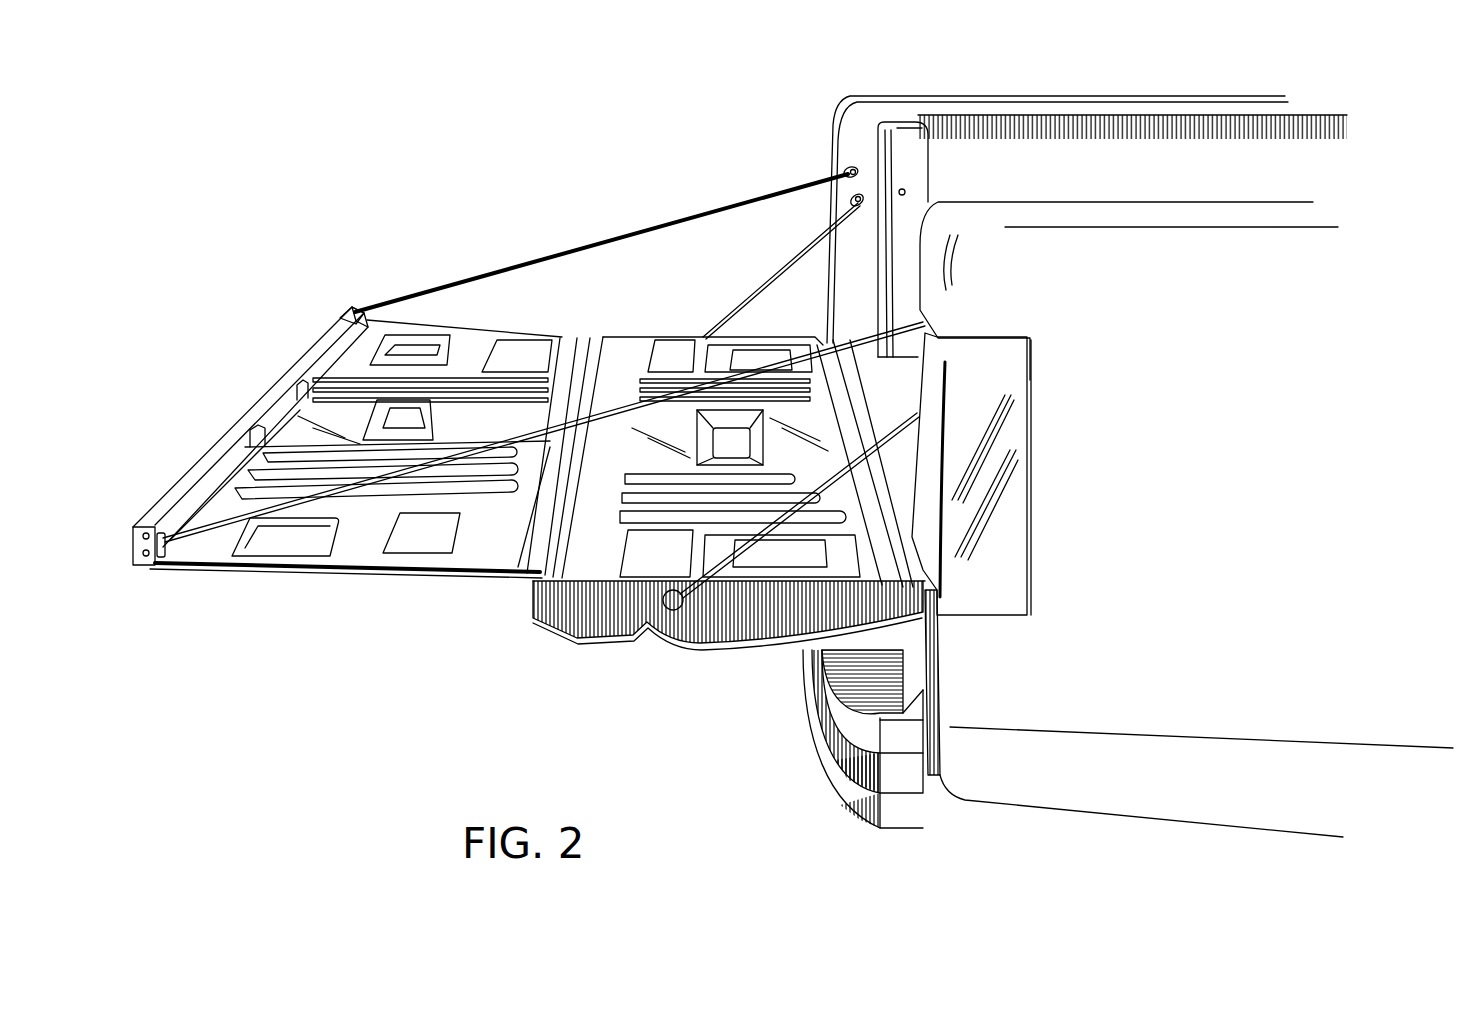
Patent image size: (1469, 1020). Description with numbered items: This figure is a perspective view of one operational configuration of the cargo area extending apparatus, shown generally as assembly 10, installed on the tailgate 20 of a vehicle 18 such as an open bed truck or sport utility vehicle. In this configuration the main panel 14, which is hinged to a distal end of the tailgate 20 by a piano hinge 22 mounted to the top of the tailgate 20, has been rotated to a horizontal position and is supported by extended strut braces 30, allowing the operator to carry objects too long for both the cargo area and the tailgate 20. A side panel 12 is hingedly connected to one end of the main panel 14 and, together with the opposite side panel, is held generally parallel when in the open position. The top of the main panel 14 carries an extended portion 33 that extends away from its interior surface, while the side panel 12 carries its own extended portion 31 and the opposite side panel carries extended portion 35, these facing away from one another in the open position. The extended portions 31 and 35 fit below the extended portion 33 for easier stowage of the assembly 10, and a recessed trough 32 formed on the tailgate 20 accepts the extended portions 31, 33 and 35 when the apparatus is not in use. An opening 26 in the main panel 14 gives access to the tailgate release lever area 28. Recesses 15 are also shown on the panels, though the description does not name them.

The assembly 10 is at (428, 168).
The side panel 12 is at (470, 572).
The main panel 14 is at (490, 432).
The recesses 15 is at (520, 350).
The vehicle 18 is at (1138, 459).
The tailgate 20 is at (753, 607).
The piano hinge 22 is at (532, 580).
The opening 26 is at (405, 407).
The tailgate release lever area 28 is at (747, 458).
The extended strut braces 30 is at (553, 263).
The extended portion 31 is at (220, 480).
The recessed trough 32 is at (853, 343).
The extended portion 33 is at (356, 309).
The extended portion 35 is at (320, 370).